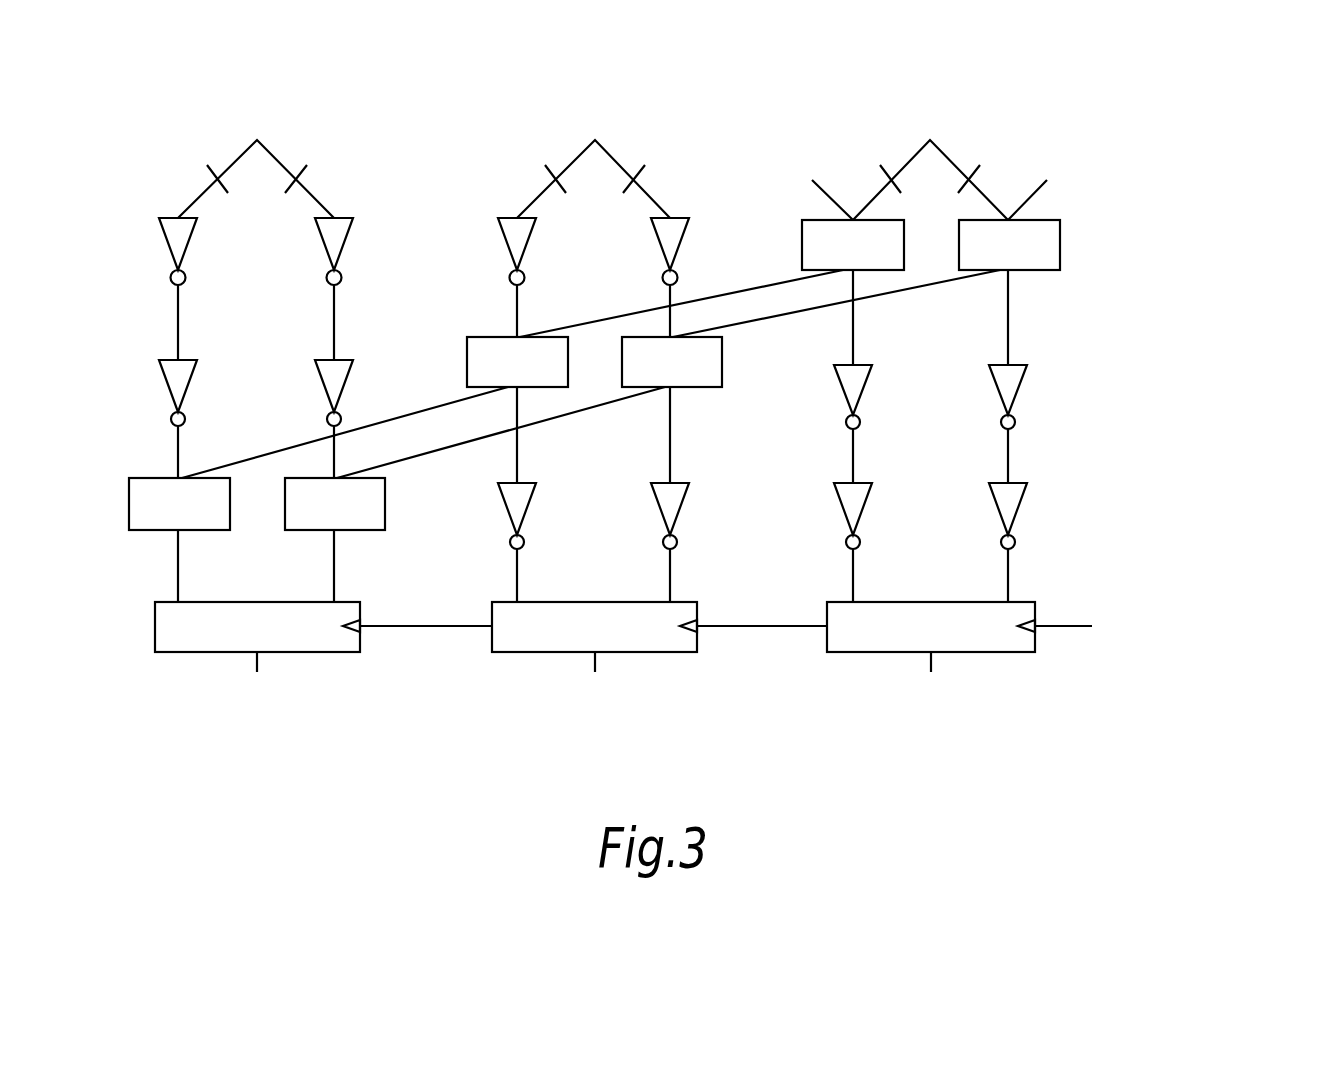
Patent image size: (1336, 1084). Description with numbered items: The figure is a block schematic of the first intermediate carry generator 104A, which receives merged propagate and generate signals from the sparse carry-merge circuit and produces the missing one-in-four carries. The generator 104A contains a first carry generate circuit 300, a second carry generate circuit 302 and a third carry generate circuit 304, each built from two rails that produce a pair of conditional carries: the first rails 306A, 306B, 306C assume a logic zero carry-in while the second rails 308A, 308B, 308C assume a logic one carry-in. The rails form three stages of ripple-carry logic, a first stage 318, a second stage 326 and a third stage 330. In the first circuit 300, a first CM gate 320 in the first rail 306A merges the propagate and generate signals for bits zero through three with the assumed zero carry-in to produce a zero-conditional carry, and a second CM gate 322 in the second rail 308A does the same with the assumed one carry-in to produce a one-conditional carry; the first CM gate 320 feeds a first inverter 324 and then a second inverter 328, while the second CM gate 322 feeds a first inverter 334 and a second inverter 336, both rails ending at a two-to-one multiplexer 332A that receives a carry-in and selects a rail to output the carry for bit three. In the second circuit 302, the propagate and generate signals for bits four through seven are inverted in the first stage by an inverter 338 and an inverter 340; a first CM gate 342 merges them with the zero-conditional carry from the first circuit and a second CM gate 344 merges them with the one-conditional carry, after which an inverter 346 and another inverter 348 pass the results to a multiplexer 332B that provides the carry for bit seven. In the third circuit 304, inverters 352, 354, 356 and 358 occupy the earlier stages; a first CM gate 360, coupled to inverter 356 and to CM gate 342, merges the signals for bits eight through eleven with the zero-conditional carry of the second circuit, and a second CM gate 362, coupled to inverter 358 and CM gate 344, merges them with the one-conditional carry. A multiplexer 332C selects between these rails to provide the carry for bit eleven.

The first intermediate carry generator 104A is at (1066, 96).
The first carry generate circuit 300 is at (951, 153).
The second carry generate circuit 302 is at (616, 153).
The third carry generate circuit 304 is at (278, 153).
The first stage 318 is at (1062, 243).
The first CM gate 320 is at (1040, 220).
The second CM gate 322 is at (823, 220).
The first inverter 324 is at (998, 388).
The second stage 326 is at (1024, 379).
The second inverter 328 is at (1001, 520).
The third stage 330 is at (1024, 493).
The first inverter 334 is at (843, 388).
The second inverter 336 is at (843, 495).
The inverter 338 is at (679, 253).
The inverter 340 is at (508, 250).
The first CM gate 342 is at (722, 355).
The second CM gate 344 is at (485, 337).
The inverter 346 is at (683, 518).
The inverter 348 is at (507, 498).
The inverter 352 is at (343, 252).
The inverter 354 is at (168, 247).
The inverter 356 is at (343, 388).
The inverter 358 is at (168, 388).
The first CM gate 360 is at (305, 478).
The second CM gate 362 is at (150, 478).
The first rail 306A is at (1010, 458).
The first rail 306B is at (670, 318).
The first rail 306C is at (336, 330).
The second rail 308A is at (855, 458).
The second rail 308B is at (520, 292).
The second rail 308C is at (180, 320).
The 2:1 multiplexer 332A is at (992, 652).
The 2:1 multiplexer 332B is at (653, 652).
The 2:1 multiplexer 332C is at (317, 652).